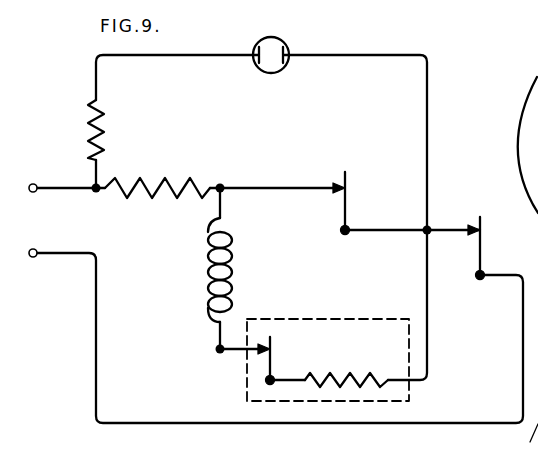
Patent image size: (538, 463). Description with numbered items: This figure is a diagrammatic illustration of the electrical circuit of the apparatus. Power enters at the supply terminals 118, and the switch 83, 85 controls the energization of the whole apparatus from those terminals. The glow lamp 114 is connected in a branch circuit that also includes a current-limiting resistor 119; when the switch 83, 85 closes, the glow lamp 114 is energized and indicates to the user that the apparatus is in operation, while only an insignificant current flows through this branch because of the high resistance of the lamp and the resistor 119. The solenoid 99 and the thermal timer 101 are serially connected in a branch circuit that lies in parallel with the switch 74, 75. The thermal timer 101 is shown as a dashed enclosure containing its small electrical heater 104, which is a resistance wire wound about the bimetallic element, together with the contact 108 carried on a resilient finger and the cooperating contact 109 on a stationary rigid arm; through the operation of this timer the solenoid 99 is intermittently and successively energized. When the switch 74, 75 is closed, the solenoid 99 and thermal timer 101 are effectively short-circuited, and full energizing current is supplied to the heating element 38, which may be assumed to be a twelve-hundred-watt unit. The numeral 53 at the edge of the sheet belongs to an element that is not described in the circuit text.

The heating element 38 is at (167, 181).
The adjacent figure element 53 is at (537, 69).
The switch contact 74 is at (338, 181).
The switch contact 75 is at (352, 202).
The switch contact 83 is at (454, 229).
The switch contact 85 is at (486, 247).
The solenoid 99 is at (233, 279).
The thermal timer 101 is at (358, 296).
The electrical heater 104 is at (343, 386).
The contact 108 is at (275, 356).
The contact 109 is at (262, 343).
The glow lamp 114 is at (286, 43).
The supply terminals 118 is at (35, 193).
The current-limiting resistor 119 is at (105, 133).